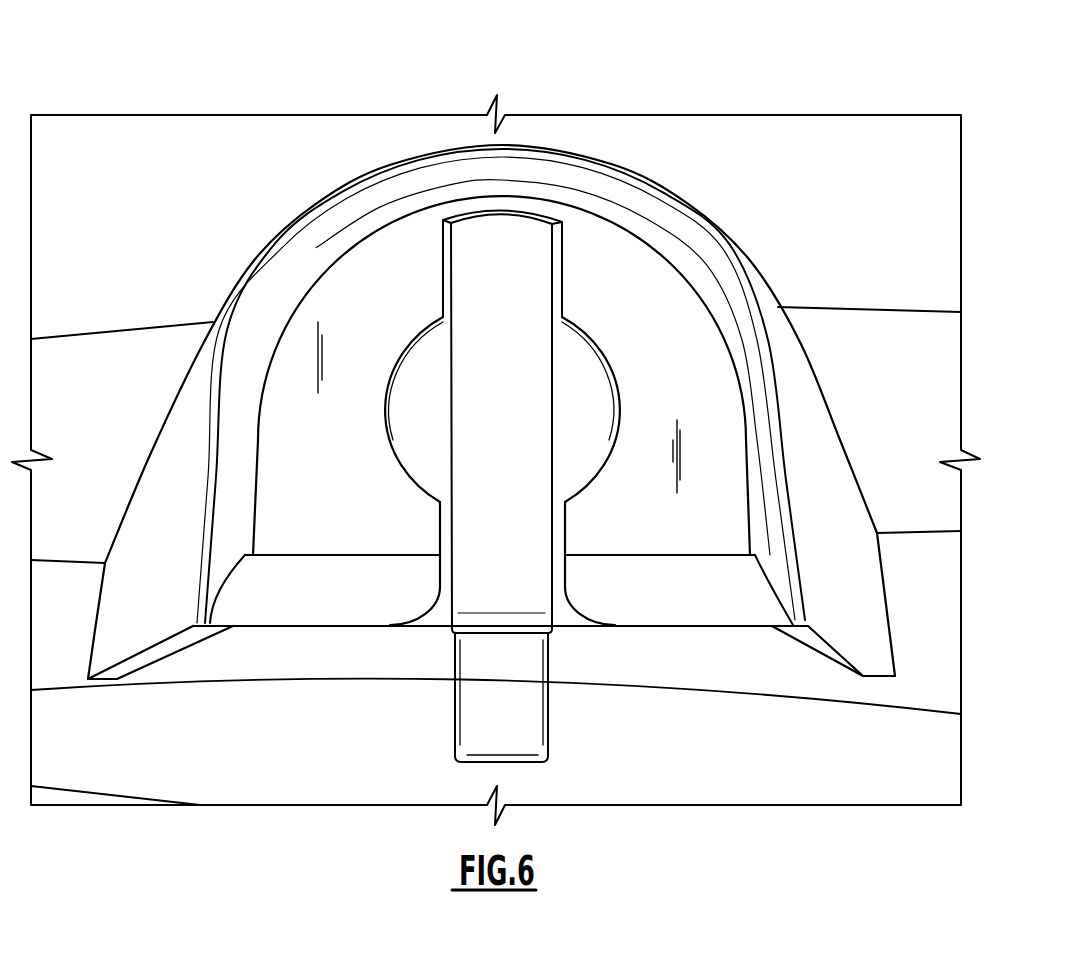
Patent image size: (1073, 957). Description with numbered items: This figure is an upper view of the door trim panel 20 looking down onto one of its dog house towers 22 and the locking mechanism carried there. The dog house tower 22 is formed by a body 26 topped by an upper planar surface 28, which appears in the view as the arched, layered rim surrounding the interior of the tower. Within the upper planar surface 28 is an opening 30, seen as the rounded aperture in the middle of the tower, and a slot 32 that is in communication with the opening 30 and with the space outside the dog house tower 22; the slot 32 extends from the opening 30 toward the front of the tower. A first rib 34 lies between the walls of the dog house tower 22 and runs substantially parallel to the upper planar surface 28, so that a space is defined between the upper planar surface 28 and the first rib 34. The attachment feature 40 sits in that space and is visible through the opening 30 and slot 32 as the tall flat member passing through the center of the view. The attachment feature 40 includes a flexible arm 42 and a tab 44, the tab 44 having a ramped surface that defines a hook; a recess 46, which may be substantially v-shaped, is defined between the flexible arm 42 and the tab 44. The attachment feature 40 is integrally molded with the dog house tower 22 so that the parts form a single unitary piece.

The door trim panel 20 is at (979, 126).
The dog house tower 22 is at (818, 432).
The body 26 is at (170, 410).
The upper planar surface 28 is at (688, 330).
The opening 30 is at (588, 420).
The slot 32 is at (557, 597).
The first rib 34 is at (411, 378).
The attachment feature 40 is at (530, 290).
The flexible arm 42 is at (498, 539).
The tab 44 is at (480, 715).
The recess 46 is at (485, 603).